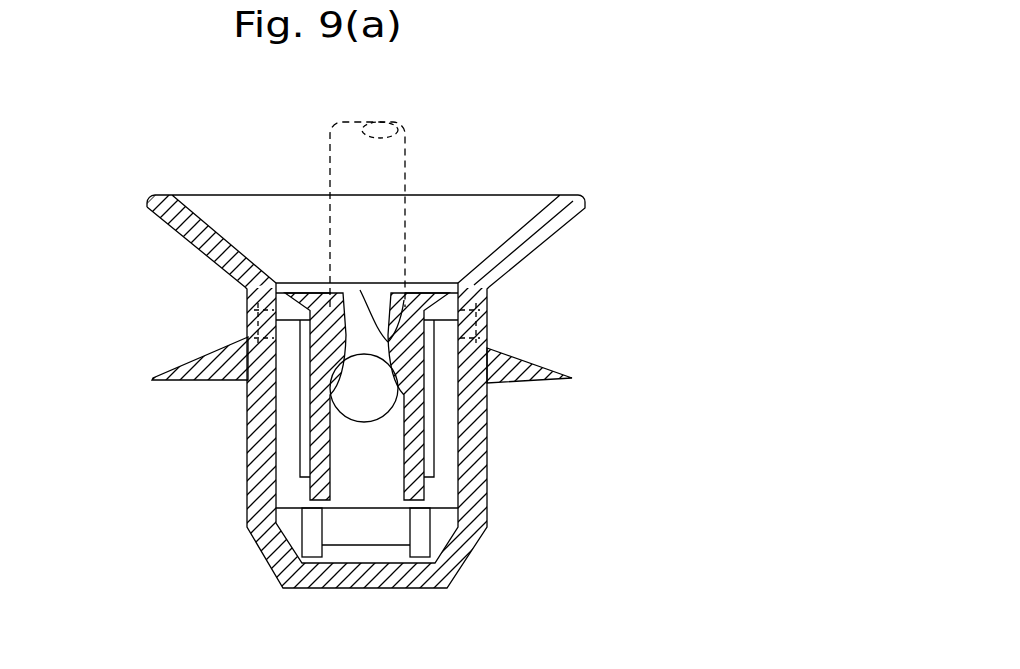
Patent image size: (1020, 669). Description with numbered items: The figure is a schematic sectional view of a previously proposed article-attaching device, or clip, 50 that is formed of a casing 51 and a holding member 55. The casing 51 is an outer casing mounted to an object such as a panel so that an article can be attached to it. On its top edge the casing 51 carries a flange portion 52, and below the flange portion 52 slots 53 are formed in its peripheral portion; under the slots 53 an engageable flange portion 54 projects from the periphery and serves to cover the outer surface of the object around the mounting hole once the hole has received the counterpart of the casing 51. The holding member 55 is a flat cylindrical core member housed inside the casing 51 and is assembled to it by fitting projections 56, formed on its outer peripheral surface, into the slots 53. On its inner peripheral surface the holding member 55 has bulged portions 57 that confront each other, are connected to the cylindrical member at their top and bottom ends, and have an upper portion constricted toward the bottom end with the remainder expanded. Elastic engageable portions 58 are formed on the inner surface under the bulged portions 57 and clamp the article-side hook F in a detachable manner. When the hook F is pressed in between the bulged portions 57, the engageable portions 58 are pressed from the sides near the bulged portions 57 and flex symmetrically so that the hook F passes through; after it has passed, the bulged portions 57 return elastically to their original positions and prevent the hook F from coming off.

The device 50 is at (118, 458).
The casing 51 is at (240, 496).
The flange portion 52 is at (563, 232).
The slots 53 is at (487, 333).
The engageable flange portion 54 is at (572, 377).
The holding member 55 is at (290, 513).
The projections 56 is at (490, 318).
The bulged portions 57 is at (360, 290).
The elastic engageable portions 58 is at (386, 386).
The hook F is at (404, 150).